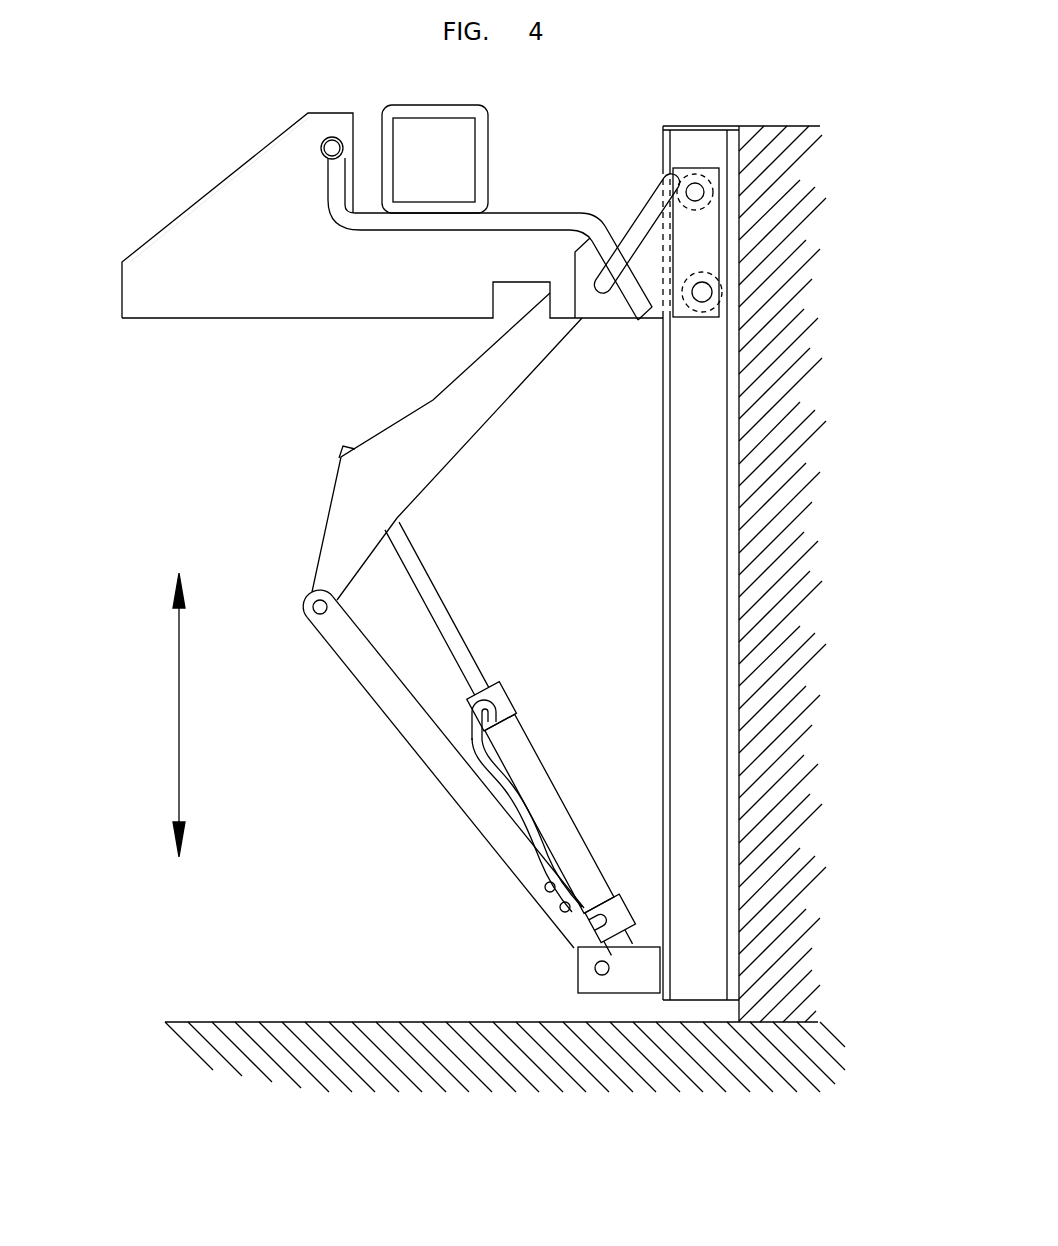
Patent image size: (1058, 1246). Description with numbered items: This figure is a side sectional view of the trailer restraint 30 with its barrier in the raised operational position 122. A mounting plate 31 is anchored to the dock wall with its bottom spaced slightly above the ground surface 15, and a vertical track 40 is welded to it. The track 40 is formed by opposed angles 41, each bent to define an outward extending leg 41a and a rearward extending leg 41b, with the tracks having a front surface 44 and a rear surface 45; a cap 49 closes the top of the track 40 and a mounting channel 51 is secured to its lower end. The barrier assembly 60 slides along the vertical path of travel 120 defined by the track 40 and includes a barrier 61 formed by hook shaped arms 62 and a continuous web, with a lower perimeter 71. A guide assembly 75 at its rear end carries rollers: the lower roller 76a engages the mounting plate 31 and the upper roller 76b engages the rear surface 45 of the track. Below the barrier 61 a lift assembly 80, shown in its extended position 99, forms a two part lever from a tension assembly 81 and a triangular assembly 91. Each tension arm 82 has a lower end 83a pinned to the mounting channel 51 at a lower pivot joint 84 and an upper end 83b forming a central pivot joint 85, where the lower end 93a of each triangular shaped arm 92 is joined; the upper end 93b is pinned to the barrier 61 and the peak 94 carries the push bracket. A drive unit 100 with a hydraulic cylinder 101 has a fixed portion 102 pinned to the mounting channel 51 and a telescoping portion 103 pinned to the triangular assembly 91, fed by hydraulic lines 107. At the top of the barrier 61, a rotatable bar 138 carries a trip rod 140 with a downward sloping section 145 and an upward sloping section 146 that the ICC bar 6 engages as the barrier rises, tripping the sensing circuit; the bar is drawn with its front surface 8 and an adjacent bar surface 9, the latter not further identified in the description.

The ICC bar 6 is at (460, 105).
The front surface 8 is at (380, 130).
The control box side 9 is at (490, 145).
The ground surface 15 is at (245, 1022).
The trailer restraint 30 is at (185, 461).
The mounting plate 31 is at (740, 425).
The track 40 is at (655, 605).
The angle 41 is at (688, 660).
The outward extending leg 41a is at (660, 712).
The rearward extending leg 41b is at (718, 631).
The front surface 44 is at (660, 790).
The rear surface 45 is at (672, 818).
The cap 49 is at (686, 126).
The mounting channel 51 is at (588, 984).
The barrier assembly 60 is at (270, 130).
The barrier 61 is at (190, 238).
The hook shaped arm 62 is at (405, 296).
The lower perimeter 71 is at (230, 320).
The guide assembly 75 is at (684, 326).
The lower roller 76a is at (700, 274).
The upper roller 76b is at (706, 152).
The lift assembly 80 is at (405, 620).
The tension assembly 81 is at (425, 762).
The tension arm 82 is at (407, 722).
The lower end 83a is at (576, 940).
The upper end 83b is at (325, 627).
The lower pivot joint 84 is at (614, 925).
The central pivot joint 85 is at (313, 610).
The triangular assembly 91 is at (383, 448).
The triangular shaped arm 92 is at (412, 435).
The lower end 93a is at (310, 592).
The upper end 93b is at (557, 327).
The peak 94 is at (340, 457).
The extended position 99 is at (428, 399).
The drive unit 100 is at (510, 743).
The hydraulic cylinder 101 is at (492, 706).
The fixed portion 102 is at (549, 813).
The telescoping portion 103 is at (437, 608).
The hydraulic lines 107 is at (470, 725).
The vertical path of travel 120 is at (179, 742).
The raised operational position 122 is at (172, 138).
The rotatable bar 138 is at (324, 150).
The trip rod 140 is at (505, 214).
The downward sloping section 145 is at (338, 190).
The upward sloping section 146 is at (524, 214).